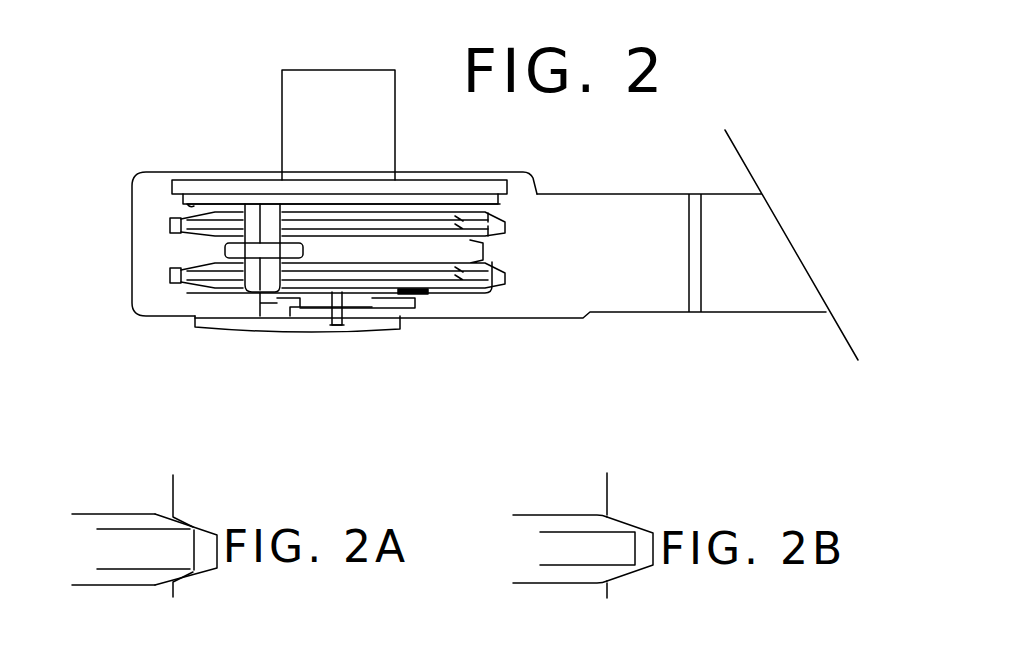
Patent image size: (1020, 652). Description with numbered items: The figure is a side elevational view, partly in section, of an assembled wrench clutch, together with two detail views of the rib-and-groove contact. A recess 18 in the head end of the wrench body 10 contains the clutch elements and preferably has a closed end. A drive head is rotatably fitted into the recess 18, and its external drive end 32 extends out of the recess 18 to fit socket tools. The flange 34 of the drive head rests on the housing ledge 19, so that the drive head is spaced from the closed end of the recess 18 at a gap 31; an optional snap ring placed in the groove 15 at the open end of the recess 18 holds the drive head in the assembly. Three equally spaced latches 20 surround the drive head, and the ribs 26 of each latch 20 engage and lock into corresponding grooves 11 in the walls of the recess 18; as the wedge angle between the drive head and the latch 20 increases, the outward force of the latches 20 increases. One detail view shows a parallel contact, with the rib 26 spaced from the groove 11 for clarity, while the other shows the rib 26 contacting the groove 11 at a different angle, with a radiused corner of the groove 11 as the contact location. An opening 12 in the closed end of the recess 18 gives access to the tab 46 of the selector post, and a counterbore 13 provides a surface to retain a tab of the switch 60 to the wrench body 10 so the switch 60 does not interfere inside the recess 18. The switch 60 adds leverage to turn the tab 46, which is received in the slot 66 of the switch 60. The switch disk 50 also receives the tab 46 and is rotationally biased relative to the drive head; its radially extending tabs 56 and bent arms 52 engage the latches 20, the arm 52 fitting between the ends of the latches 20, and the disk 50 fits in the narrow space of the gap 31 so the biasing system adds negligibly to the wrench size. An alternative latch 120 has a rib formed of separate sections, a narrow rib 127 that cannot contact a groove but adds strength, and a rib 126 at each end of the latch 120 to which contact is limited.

In FIG. 2, the wrench body 10 is at (677, 202).
In FIG. 2, the grooves 11 is at (498, 223).
In FIG. 2A, the grooves 11 is at (205, 555).
In FIG. 2B, the grooves 11 is at (647, 537).
In FIG. 2, the opening 12 is at (372, 317).
In FIG. 2, the counterbore 13 is at (407, 305).
In FIG. 2, the groove 15 is at (195, 198).
In FIG. 2, the recess 18 is at (272, 222).
In FIG. 2, the housing ledge 19 is at (177, 212).
In FIG. 2, the latches 20 is at (502, 272).
In FIG. 2, the ribs 26 is at (488, 228).
In FIG. 2A, the ribs 26 is at (163, 549).
In FIG. 2B, the ribs 26 is at (612, 553).
In FIG. 2, the gap 31 is at (467, 297).
In FIG. 2, the external drive end 32 is at (323, 90).
In FIG. 2, the flange 34 is at (298, 200).
In FIG. 2, the tab 46 is at (343, 332).
In FIG. 2, the switch disk 50 is at (315, 292).
In FIG. 2, the bent arms 52 is at (267, 272).
In FIG. 2, the radially extending tabs 56 is at (422, 295).
In FIG. 2, the switch 60 is at (280, 328).
In FIG. 2, the slot 66 is at (338, 308).
In FIG. 2, the latch 120 is at (207, 255).
In FIG. 2, the rib 126 is at (212, 273).
In FIG. 2, the rib 127 is at (177, 275).